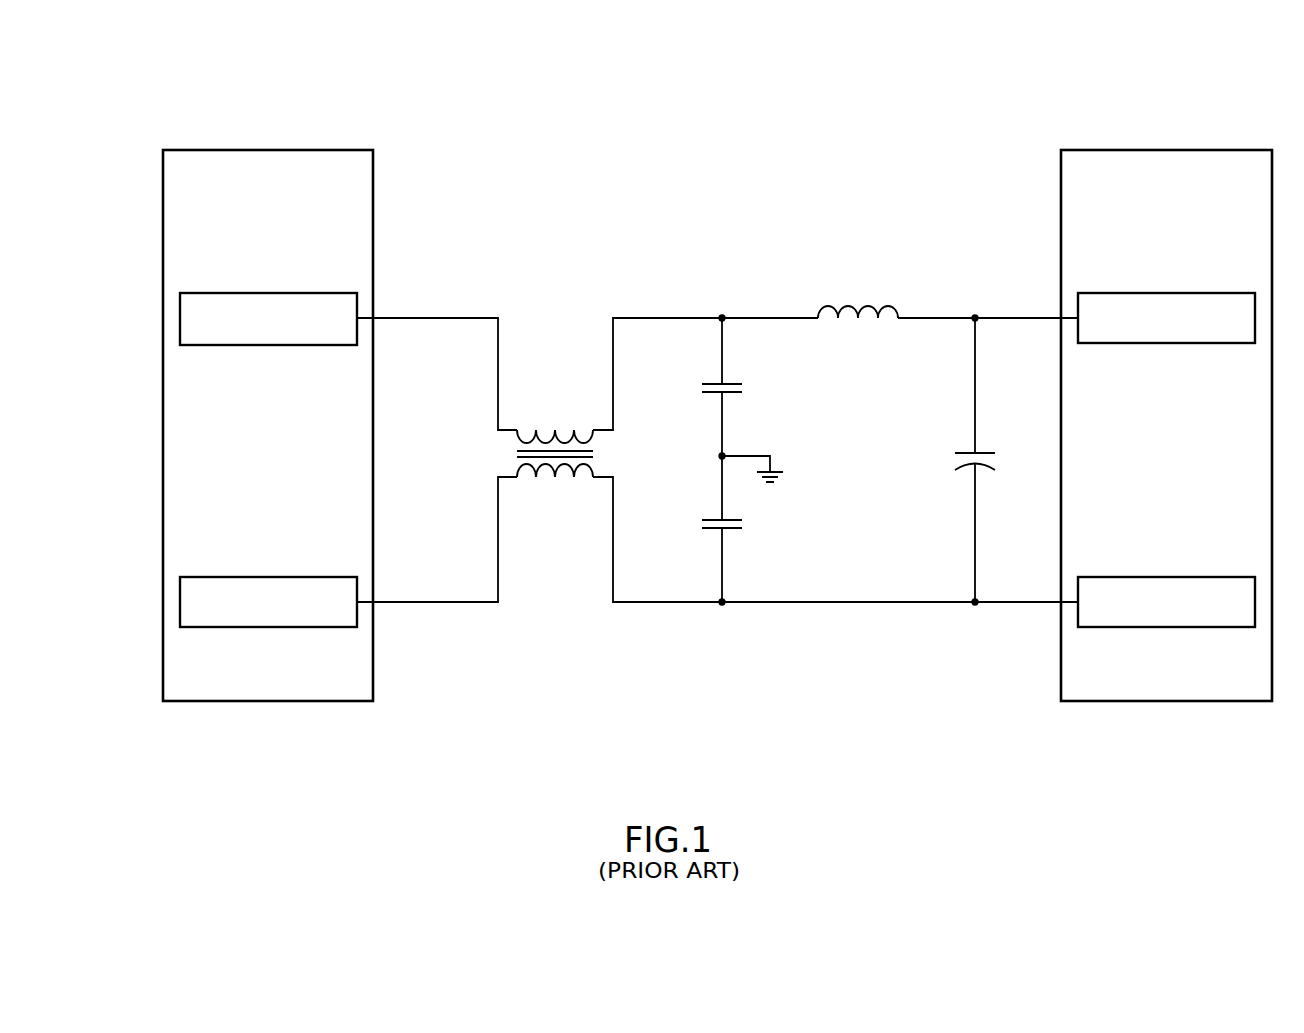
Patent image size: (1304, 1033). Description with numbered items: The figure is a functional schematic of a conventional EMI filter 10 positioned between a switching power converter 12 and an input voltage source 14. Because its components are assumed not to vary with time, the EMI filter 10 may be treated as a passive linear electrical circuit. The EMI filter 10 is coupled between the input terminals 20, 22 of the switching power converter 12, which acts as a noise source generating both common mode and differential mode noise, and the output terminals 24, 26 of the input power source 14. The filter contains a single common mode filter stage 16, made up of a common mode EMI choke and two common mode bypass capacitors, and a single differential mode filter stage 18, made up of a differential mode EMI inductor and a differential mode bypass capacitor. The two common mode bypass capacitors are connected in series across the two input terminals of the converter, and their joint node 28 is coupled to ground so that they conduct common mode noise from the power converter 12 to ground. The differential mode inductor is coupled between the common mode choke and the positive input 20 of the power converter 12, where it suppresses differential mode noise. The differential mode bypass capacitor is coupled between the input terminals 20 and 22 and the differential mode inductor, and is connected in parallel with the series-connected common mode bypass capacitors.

The EMI filter 10 is at (820, 76).
The switching power converter 12 is at (1152, 150).
The input voltage source 14 is at (252, 150).
The common mode filter stage 16 is at (648, 243).
The differential mode filter stage 18 is at (897, 223).
The positive input 20 is at (1178, 343).
The input terminal 22 is at (1178, 627).
The output terminal 24 is at (245, 345).
The output terminal 26 is at (247, 627).
The joint node 28 is at (724, 425).